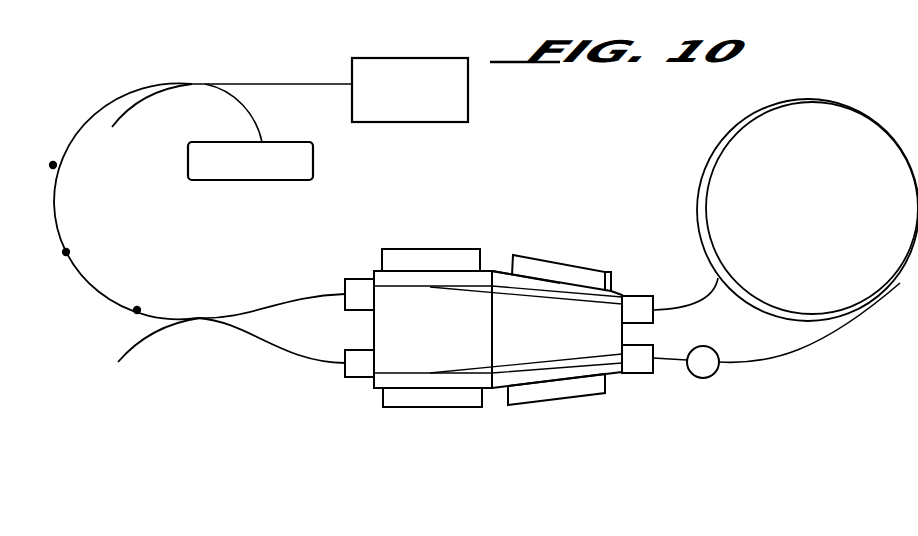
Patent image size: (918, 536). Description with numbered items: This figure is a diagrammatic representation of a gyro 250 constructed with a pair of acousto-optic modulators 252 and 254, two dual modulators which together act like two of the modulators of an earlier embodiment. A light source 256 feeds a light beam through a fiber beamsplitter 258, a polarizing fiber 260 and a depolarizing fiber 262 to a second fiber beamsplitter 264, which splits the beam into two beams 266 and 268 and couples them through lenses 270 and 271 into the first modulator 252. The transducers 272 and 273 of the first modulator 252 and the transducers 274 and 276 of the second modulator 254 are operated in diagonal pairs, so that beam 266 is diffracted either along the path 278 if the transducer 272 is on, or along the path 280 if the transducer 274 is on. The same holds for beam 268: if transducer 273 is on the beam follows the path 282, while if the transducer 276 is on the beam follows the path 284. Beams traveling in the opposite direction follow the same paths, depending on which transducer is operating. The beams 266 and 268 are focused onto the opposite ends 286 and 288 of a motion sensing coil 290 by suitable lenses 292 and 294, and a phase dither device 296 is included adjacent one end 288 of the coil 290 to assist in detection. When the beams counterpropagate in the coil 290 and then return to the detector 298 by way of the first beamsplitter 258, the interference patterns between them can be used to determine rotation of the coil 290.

The gyro 250 is at (487, 226).
The first acousto-optic modulator 252 is at (483, 390).
The second acousto-optic modulator 254 is at (502, 272).
The light source 256 is at (452, 58).
The fiber beamsplitter 258 is at (190, 84).
The polarizing fiber 260 is at (53, 198).
The depolarizing fiber 262 is at (123, 273).
The second fiber beamsplitter 264 is at (203, 323).
The first beam 266 is at (387, 285).
The second beam 268 is at (365, 393).
The lens 270 is at (345, 282).
The lens 271 is at (353, 380).
The transducer 272 is at (413, 249).
The transducer 273 is at (466, 407).
The transducer 274 is at (538, 257).
The transducer 276 is at (528, 407).
The path 278 is at (577, 306).
The path 280 is at (615, 295).
The path 282 is at (553, 368).
The path 284 is at (610, 380).
The end of coil 286 is at (655, 312).
The end of coil 288 is at (657, 360).
The motion sensing coil 290 is at (782, 105).
The lens 292 is at (640, 293).
The lens 294 is at (628, 377).
The phase dither device 296 is at (716, 351).
The detector 298 is at (314, 155).